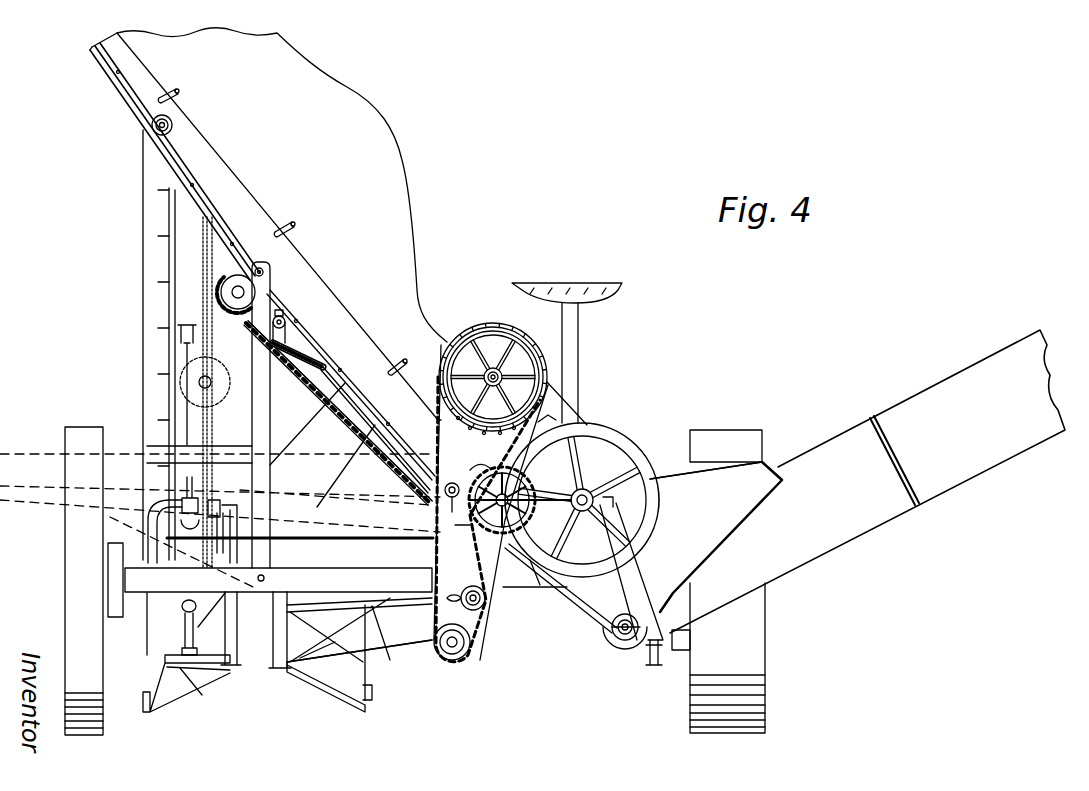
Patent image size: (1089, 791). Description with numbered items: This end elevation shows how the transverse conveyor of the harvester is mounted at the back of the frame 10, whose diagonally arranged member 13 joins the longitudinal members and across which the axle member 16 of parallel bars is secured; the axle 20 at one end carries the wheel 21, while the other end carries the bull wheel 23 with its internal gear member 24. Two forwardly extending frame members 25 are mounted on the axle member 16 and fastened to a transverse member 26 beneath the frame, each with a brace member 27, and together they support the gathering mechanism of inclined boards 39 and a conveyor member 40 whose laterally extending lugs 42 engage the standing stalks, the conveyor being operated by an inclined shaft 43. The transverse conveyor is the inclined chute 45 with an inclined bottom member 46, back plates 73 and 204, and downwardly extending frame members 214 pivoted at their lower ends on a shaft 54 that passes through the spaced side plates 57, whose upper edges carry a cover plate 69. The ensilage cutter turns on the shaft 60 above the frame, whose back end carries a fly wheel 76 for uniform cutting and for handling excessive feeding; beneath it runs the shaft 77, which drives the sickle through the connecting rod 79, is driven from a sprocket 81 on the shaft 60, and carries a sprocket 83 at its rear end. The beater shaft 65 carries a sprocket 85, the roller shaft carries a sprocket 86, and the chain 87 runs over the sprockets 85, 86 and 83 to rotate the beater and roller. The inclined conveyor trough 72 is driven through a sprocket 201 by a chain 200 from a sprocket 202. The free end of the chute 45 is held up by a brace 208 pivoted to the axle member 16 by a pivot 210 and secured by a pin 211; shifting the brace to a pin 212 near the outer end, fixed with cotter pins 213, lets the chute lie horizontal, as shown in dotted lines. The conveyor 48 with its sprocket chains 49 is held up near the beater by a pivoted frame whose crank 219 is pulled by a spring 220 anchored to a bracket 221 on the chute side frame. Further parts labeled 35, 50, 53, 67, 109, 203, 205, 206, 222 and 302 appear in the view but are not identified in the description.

The frame 10 is at (653, 663).
The diagonally arranged member 13 is at (535, 573).
The axle member 16 is at (278, 579).
The axle 20 is at (64, 582).
The wheel 21 is at (72, 620).
The bull wheel 23 is at (726, 446).
The internal gear member 24 is at (690, 633).
The forwardly extending frame members 25 is at (240, 637).
The transverse member 26 is at (359, 655).
The brace member 27 is at (150, 685).
The seat 35 is at (567, 353).
The boards 39 is at (177, 349).
The conveyor member 40 is at (209, 628).
The laterally extending lugs 42 is at (183, 675).
The inclined shaft 43 is at (187, 423).
The inclined chute 45 is at (265, 226).
The inclined bottom member 46 is at (138, 118).
The conveyor member 48 is at (356, 441).
The sprocket chains 49 is at (349, 432).
The sprocket 50 is at (226, 283).
The chain 53 is at (232, 290).
The shaft 54 is at (447, 502).
The side plates 57 is at (716, 537).
The shaft 60 is at (584, 490).
The beater shaft 65 is at (545, 480).
The bracket 67 is at (545, 415).
The cover plate 69 is at (678, 478).
The inclined conveyor trough 72 is at (867, 481).
The back plate 73 is at (282, 185).
The fly wheel 76 is at (613, 630).
The shaft 77 is at (455, 648).
The connecting rod 79 is at (359, 655).
The sprocket 81 is at (485, 540).
The sprocket 83 is at (444, 662).
The sprocket 85 is at (528, 342).
The sprocket 86 is at (455, 529).
The chain 87 is at (440, 447).
The brace 109 is at (322, 445).
The chain 200 is at (575, 605).
The sprocket 201 is at (620, 640).
The sprocket 202 is at (520, 500).
The sprocket 203 is at (484, 606).
The back plate 204 is at (351, 378).
The pin 205 is at (181, 95).
The pin 206 is at (408, 348).
The brace 208 is at (270, 390).
The pivots 210 is at (273, 578).
The pins 211 is at (265, 268).
The pins 212 is at (172, 124).
The cotter pins 213 is at (259, 264).
The frame members 214 is at (196, 182).
The crank 219 is at (285, 326).
The spring 220 is at (320, 356).
The bracket 221 is at (355, 385).
The gear box 222 is at (290, 566).
The bracket 302 is at (465, 465).